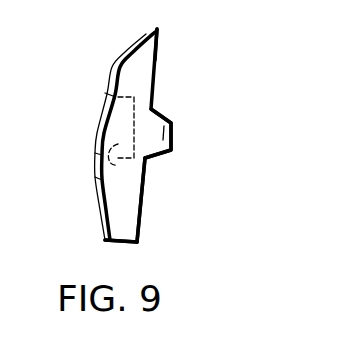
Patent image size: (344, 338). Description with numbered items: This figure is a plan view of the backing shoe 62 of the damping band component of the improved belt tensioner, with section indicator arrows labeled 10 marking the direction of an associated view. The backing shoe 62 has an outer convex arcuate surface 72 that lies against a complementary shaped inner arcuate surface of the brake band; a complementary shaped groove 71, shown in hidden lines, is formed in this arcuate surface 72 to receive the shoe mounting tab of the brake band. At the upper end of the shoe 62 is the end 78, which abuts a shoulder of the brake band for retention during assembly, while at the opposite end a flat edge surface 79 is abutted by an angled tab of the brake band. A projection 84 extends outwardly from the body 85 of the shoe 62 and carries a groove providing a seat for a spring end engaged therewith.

The section view direction arrows 10 is at (62, 120).
The backing shoe 62 is at (167, 68).
The groove 71 is at (115, 166).
The outer convex arcuate surface 72 is at (116, 58).
The end 78 is at (158, 29).
The flat edge surface 79 is at (123, 242).
The projection 84 is at (153, 138).
The body 85 is at (125, 210).